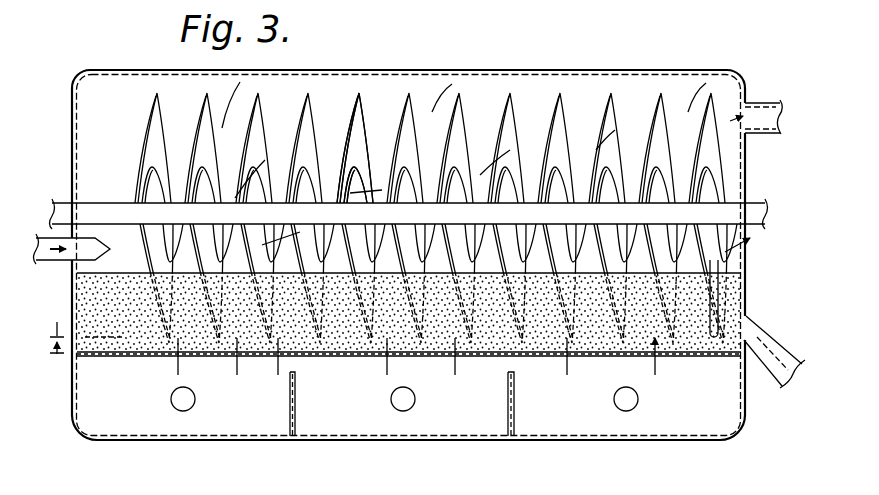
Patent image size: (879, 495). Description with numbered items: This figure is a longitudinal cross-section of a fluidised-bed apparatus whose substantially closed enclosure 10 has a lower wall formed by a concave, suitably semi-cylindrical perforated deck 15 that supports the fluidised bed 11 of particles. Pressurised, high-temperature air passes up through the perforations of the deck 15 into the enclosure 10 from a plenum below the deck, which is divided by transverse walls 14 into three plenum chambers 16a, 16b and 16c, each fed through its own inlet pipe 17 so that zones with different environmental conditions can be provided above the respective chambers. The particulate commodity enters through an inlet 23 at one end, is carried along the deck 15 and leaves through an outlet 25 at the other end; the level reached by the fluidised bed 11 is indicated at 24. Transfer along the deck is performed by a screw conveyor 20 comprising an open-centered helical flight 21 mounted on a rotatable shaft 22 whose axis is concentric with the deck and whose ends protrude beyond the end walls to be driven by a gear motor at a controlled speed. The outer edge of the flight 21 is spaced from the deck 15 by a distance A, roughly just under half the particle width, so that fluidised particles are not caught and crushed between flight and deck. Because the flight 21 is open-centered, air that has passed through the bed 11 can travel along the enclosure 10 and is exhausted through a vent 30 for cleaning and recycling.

The enclosure 10 is at (615, 69).
The fluidised bed 11 is at (80, 318).
The transverse walls 14 is at (296, 408).
The perforated deck 15 is at (113, 358).
The first plenum chamber 16a is at (113, 412).
The second plenum chamber 16b is at (462, 410).
The third plenum chamber 16c is at (690, 410).
The inlet pipe 17 is at (183, 408).
The screw conveyor 20 is at (466, 100).
The helical flight 21 is at (366, 108).
The rotatable shaft 22 is at (113, 207).
The inlet 23 is at (58, 262).
The level of the fluidised bed 24 is at (742, 263).
The outlet 25 is at (748, 332).
The vent 30 is at (771, 102).
The distance between flight and deck A is at (56, 362).